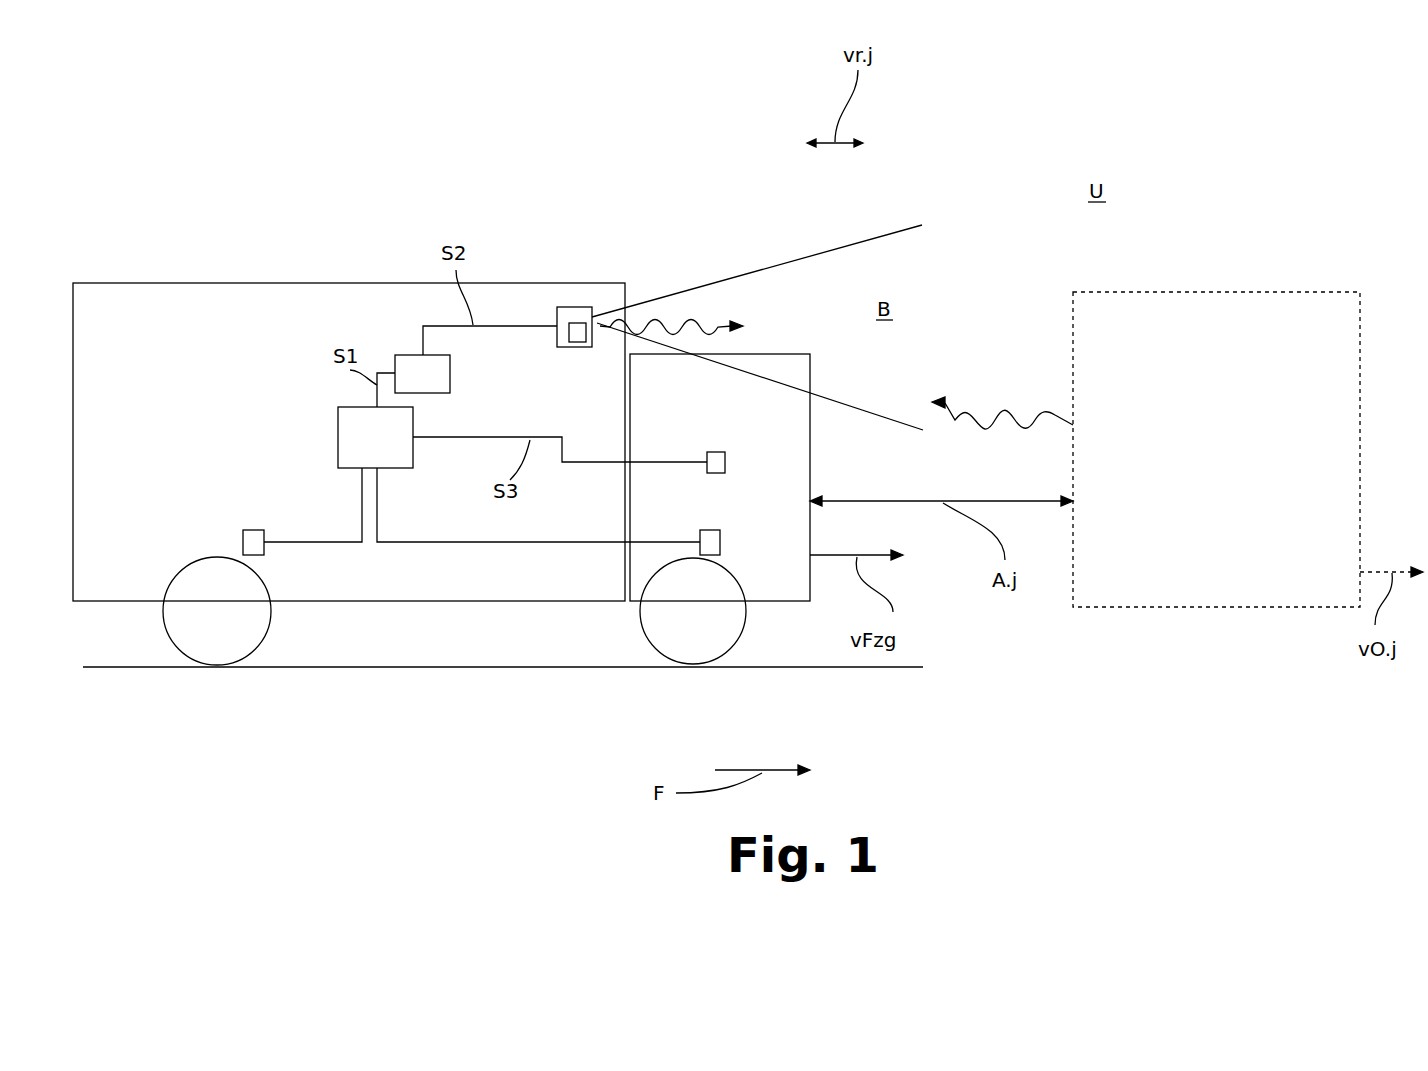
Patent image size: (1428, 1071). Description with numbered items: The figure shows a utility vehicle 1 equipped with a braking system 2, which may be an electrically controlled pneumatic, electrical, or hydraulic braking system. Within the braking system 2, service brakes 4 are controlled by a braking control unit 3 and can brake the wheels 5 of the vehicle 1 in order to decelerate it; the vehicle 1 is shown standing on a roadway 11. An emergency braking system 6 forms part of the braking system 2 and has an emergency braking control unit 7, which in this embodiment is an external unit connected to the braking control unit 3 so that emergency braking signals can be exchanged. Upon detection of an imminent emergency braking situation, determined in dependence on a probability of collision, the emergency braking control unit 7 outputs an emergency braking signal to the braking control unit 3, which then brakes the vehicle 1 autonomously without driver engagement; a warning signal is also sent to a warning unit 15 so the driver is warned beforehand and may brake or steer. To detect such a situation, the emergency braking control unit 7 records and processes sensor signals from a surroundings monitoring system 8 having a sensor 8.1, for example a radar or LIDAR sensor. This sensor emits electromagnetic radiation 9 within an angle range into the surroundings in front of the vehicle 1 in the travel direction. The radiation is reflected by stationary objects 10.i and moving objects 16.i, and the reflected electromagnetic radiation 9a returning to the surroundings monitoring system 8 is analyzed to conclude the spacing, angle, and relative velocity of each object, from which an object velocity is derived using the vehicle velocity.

The vehicle 1 is at (392, 640).
The braking system 2 is at (295, 313).
The braking control unit 3 is at (338, 412).
The service brakes 4 is at (254, 530).
The wheels 5 is at (218, 668).
The emergency braking system 6 is at (398, 310).
The emergency braking control unit 7 is at (455, 372).
The surroundings monitoring system 8 is at (573, 307).
The sensor 8.1 is at (575, 342).
The electromagnetic radiation 9 is at (673, 320).
The reflected electromagnetic radiation 9a is at (988, 402).
The stationary objects 10.i is at (1216, 449).
The roadway 11 is at (505, 668).
The warning unit 15 is at (713, 450).
The moving objects 16.i is at (1230, 453).